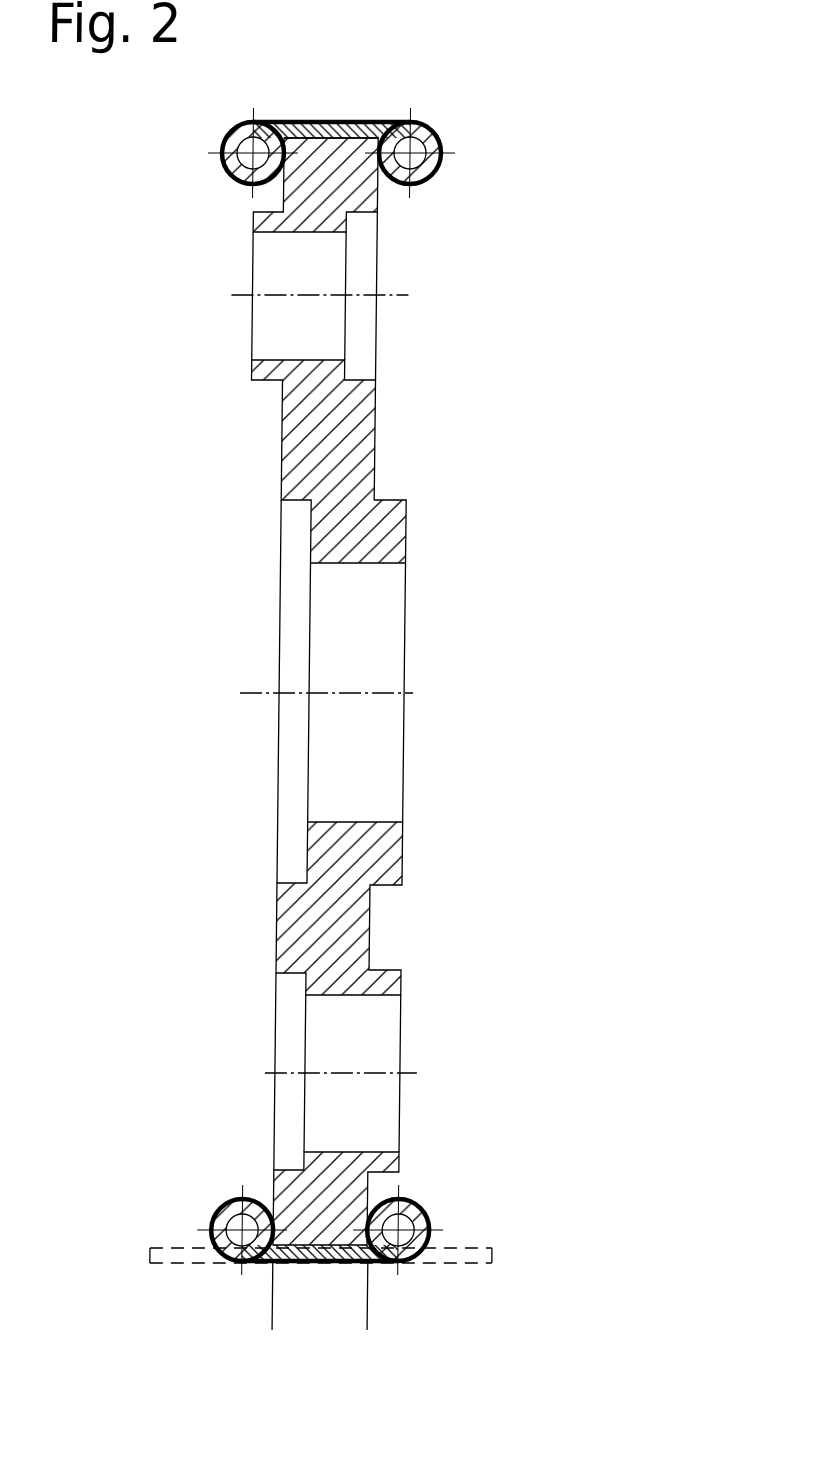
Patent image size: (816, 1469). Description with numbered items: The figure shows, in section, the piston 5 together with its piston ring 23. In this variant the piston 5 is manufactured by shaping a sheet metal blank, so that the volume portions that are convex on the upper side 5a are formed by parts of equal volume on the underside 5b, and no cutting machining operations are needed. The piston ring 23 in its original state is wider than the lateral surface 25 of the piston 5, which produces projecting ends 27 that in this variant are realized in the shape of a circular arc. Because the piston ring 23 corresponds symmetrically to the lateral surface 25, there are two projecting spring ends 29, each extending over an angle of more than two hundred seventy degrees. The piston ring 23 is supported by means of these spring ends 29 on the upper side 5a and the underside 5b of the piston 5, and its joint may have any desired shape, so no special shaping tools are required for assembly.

The piston 5 is at (492, 887).
The upper side 5a is at (278, 918).
The underside 5b is at (405, 855).
The piston ring 23 is at (440, 1290).
The lateral surface 25 is at (374, 1320).
The projecting ends 27 is at (481, 1247).
The spring ends 29 is at (216, 177).